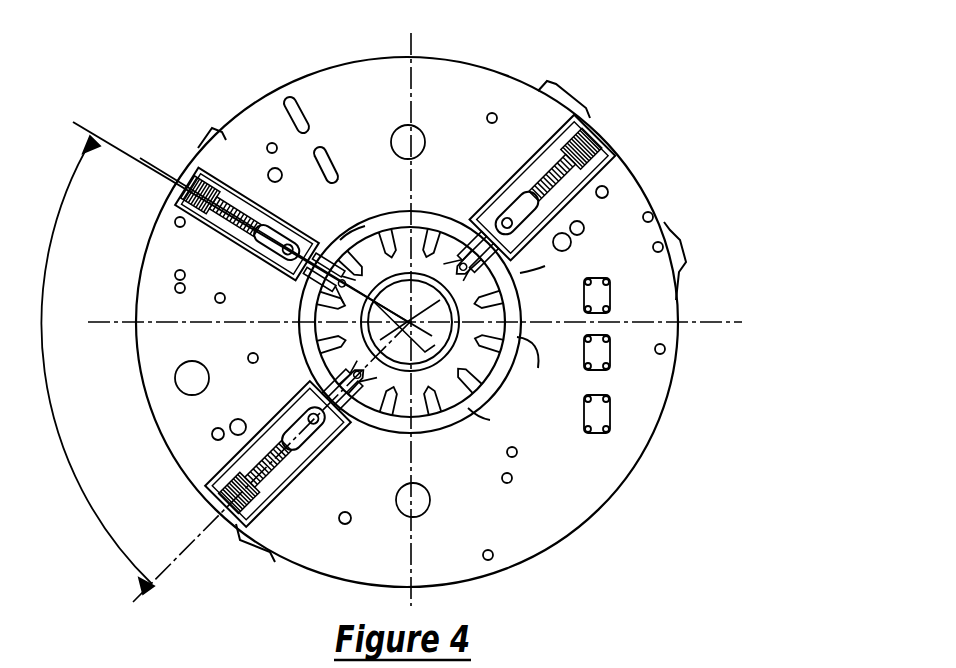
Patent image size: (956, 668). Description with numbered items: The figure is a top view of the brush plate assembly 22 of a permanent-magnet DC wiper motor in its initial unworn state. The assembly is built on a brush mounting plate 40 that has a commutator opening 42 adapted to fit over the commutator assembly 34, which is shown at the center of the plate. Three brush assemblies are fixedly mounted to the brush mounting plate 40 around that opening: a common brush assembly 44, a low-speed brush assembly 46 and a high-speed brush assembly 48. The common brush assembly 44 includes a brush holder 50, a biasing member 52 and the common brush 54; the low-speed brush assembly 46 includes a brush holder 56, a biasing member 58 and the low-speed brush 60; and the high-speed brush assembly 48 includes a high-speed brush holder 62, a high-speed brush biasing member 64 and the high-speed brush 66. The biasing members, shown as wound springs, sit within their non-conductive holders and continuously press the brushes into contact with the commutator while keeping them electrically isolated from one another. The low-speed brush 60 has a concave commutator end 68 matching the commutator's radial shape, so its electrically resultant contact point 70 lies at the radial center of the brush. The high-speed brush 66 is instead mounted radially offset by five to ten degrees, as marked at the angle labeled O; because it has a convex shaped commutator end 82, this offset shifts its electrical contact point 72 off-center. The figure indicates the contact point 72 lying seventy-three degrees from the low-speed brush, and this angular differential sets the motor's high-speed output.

The brush plate assembly 22 is at (386, 304).
The commutator assembly 34 is at (538, 368).
The brush mounting plate 40 is at (558, 538).
The commutator opening 42 is at (443, 213).
The common brush assembly 44 is at (587, 169).
The low-speed brush assembly 46 is at (254, 456).
The high-speed brush assembly 48 is at (252, 220).
The brush holder 50 is at (625, 182).
The biasing member 52 is at (588, 125).
The common brush 54 is at (520, 273).
The brush holder 56 is at (282, 500).
The biasing member 58 is at (205, 508).
The low-speed brush 60 is at (352, 428).
The high-speed brush holder 62 is at (278, 236).
The high-speed brush biasing member 64 is at (190, 178).
The high-speed brush 66 is at (300, 290).
The concave commutator end 68 is at (404, 436).
The electrically resultant contact point of the low-speed brush 70 is at (300, 385).
The electrical contact point of the high-speed brush 72 is at (340, 240).
The convex shaped commutator end 82 is at (208, 247).